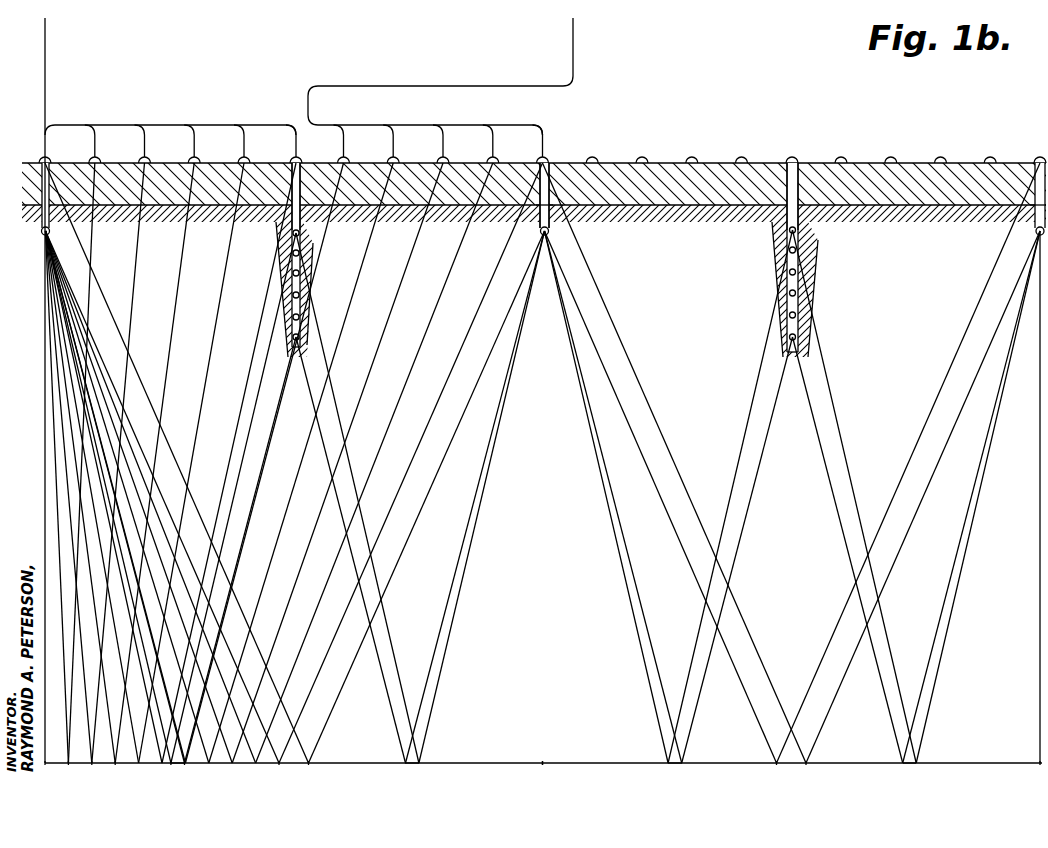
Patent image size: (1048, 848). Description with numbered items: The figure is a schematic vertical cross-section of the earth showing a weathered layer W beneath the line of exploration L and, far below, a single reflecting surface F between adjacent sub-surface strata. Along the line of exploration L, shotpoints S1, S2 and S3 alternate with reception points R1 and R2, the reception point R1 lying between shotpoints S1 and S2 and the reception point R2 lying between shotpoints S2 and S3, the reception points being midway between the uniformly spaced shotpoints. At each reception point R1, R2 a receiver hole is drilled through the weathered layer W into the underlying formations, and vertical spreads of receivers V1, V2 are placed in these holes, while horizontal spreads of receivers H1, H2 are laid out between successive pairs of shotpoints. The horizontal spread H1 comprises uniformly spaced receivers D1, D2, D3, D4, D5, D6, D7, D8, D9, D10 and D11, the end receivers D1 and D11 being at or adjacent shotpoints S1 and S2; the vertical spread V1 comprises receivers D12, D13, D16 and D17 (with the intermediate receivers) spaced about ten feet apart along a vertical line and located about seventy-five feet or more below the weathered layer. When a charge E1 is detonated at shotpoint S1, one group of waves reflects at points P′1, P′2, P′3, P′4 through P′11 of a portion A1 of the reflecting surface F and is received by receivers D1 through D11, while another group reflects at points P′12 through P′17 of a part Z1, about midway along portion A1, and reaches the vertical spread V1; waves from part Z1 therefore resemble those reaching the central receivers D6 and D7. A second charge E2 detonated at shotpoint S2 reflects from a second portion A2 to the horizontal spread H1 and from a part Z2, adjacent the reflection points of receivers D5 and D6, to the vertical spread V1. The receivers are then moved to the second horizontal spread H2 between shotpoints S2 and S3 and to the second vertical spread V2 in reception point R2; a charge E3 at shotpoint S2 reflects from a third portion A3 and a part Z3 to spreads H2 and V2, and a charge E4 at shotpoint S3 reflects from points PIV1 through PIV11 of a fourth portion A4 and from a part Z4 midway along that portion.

The receiver D1 is at (55, 90).
The receiver D2 is at (102, 144).
The receiver D3 is at (153, 144).
The receiver D4 is at (202, 144).
The receiver D5 is at (250, 144).
The receiver D6 is at (287, 144).
The receiver D7 is at (351, 144).
The receiver D8 is at (400, 144).
The receiver D9 is at (450, 144).
The receiver D10 is at (502, 144).
The receiver D11 is at (554, 144).
The receiver D12 is at (296, 360).
The receiver D13 is at (301, 317).
The receiver D16 is at (291, 254).
The receiver D17 is at (301, 234).
The vertical spread of receivers V1 is at (295, 283).
The second vertical spread of receivers V2 is at (806, 245).
The reception point R1 is at (291, 213).
The reception point R2 is at (786, 213).
The charge of explosive E1 is at (40, 233).
The second charge of explosive E2 is at (541, 234).
The charge of explosive E3 is at (550, 233).
The charge of explosive E4 is at (1037, 234).
The shotpoint S1 is at (40, 204).
The shotpoint S2 is at (539, 207).
The shotpoint S3 is at (1033, 207).
The line of exploration L is at (524, 159).
The weathered layer W is at (662, 206).
The reflecting surface F is at (498, 762).
The horizontal spread of receivers H1 is at (540, 110).
The second horizontal spread of receivers H2 is at (1035, 108).
The portion of the reflecting horizon A1 is at (277, 782).
The second portion of the reflecting horizon A2 is at (540, 782).
The third portion of the reflecting horizon A3 is at (780, 782).
The fourth portion of the reflecting horizon A4 is at (800, 782).
The part of the reflecting horizon Z1 is at (184, 768).
The part of the reflecting horizon Z2 is at (410, 775).
The part of the reflecting horizon Z3 is at (673, 775).
The part of the reflecting horizon Z4 is at (909, 775).
The reflection point P′1 is at (51, 774).
The reflection point P′2 is at (73, 774).
The reflection point P′3 is at (96, 774).
The reflection point P′4 is at (119, 774).
The reflection point P′11 is at (282, 774).
The reflection point P′12 is at (174, 774).
The reflection point P′17 is at (191, 774).
The reflection point PIV1 is at (810, 774).
The reflection point PIV11 is at (1026, 774).